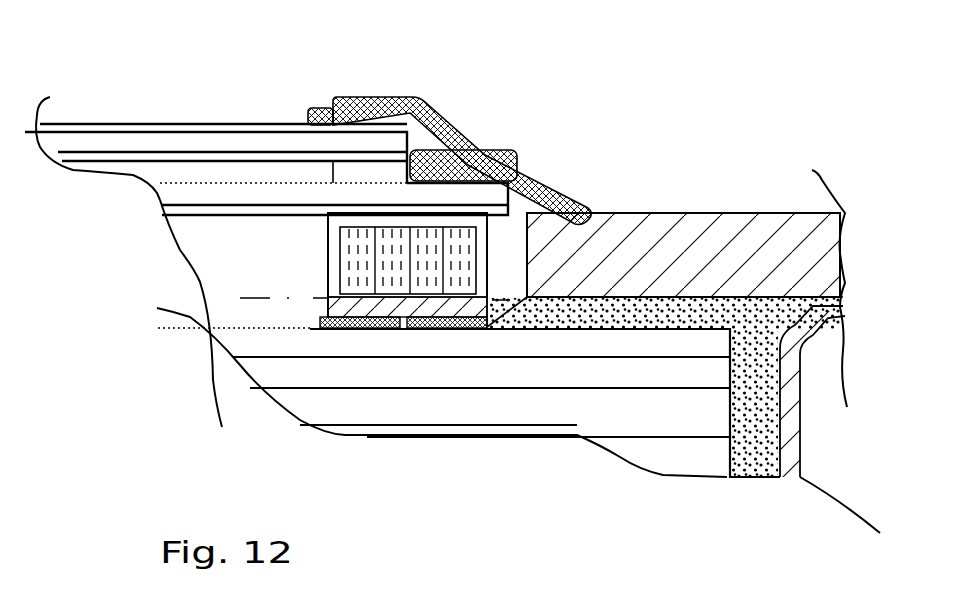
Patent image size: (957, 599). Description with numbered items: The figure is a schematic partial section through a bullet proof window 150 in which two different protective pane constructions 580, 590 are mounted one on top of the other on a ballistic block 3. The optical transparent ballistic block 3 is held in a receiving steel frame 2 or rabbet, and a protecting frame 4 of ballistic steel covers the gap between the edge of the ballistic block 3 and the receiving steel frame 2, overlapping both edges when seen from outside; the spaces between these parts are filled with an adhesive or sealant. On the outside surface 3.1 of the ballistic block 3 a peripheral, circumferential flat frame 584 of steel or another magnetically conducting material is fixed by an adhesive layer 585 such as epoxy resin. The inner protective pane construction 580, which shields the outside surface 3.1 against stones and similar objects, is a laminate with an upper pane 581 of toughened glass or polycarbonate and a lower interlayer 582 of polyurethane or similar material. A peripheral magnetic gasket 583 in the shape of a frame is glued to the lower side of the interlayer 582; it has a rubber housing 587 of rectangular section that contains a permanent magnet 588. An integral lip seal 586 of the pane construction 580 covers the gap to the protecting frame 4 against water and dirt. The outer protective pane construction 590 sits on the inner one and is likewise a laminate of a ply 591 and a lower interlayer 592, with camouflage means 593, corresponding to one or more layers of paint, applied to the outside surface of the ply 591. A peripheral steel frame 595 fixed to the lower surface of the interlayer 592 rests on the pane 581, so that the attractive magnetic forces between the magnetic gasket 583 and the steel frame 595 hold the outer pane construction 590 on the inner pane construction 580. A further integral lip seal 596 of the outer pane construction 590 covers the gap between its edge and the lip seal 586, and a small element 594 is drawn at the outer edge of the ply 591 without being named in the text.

The bullet proof window 150 is at (146, 392).
The ply 591 is at (63, 147).
The camouflage means 593 is at (147, 127).
The protective outer pane construction 590 is at (162, 137).
The interlayer 592 is at (72, 160).
The protective pane construction 580 is at (183, 188).
The pane 581 is at (200, 197).
The interlayer 582 is at (230, 217).
The housing 587 is at (333, 275).
The permanent magnet 588 is at (447, 280).
The magnetic gasket 583 is at (333, 290).
The flat frame 584 is at (377, 313).
The adhesive layer 585 is at (440, 312).
The seal bead 594 is at (340, 125).
The lip seal 596 is at (367, 110).
The lip seal 586 is at (507, 157).
The steel frame 595 is at (387, 177).
The protecting frame 4 is at (707, 230).
The outside surface 3.1 is at (637, 315).
The ballistic block 3 is at (583, 413).
The receiving steel frame 2 is at (792, 467).